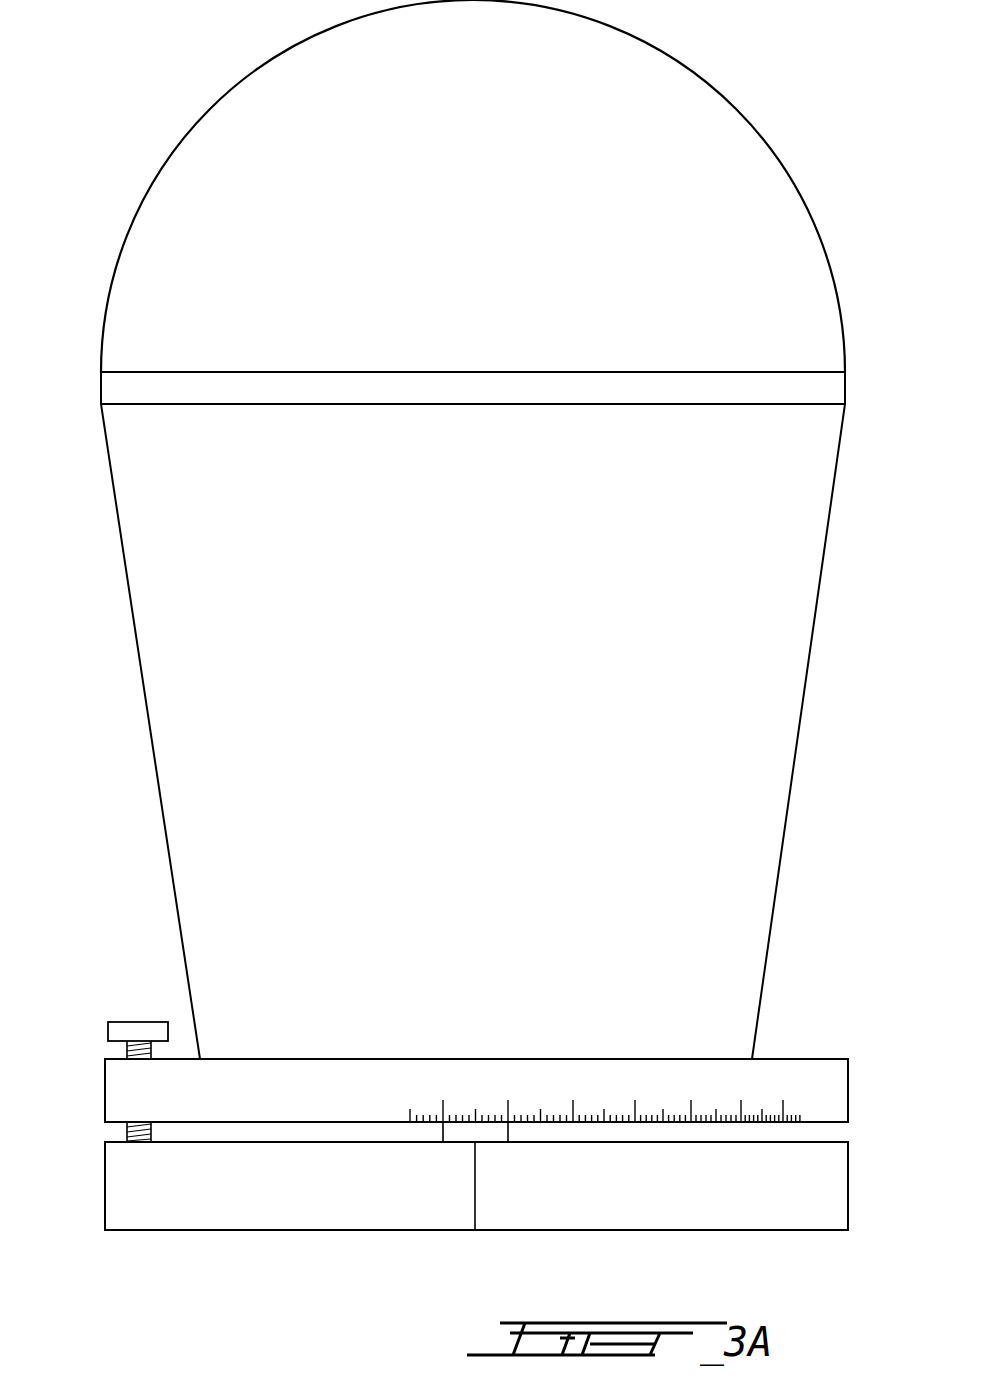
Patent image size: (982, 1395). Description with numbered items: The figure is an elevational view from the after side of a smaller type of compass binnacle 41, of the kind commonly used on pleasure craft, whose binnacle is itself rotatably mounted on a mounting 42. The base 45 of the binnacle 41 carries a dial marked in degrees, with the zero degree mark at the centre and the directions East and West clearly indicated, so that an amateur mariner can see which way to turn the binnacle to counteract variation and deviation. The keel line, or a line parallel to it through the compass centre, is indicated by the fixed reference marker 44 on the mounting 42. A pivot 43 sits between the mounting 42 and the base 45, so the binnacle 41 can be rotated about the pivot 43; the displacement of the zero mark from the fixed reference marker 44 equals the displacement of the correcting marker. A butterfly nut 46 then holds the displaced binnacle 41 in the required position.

The binnacle 41 is at (812, 730).
The mounting 42 is at (853, 1207).
The pivot 43 is at (520, 1133).
The fixed reference marker 44 is at (475, 1247).
The base 45 is at (853, 1090).
The butterfly nut 46 is at (97, 1030).